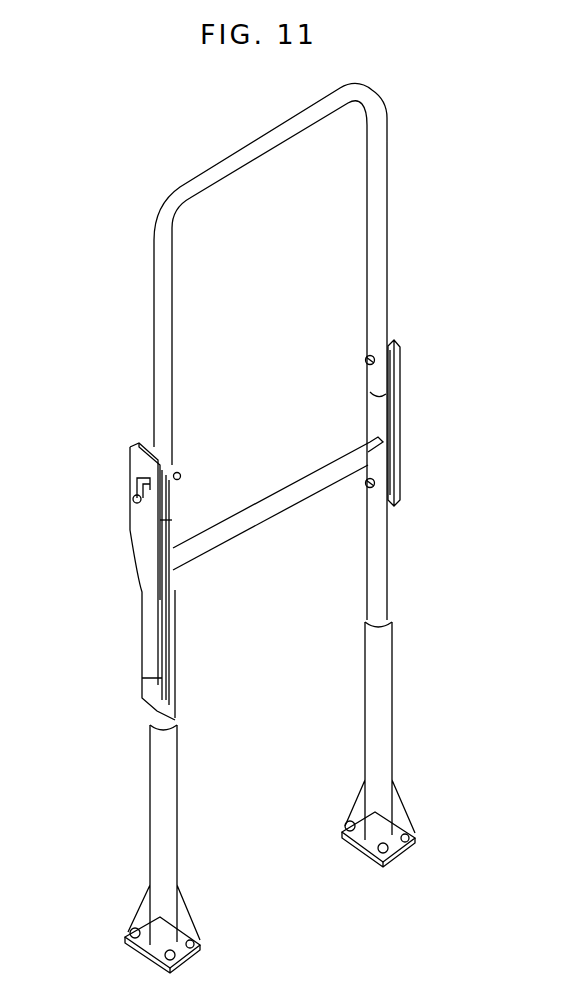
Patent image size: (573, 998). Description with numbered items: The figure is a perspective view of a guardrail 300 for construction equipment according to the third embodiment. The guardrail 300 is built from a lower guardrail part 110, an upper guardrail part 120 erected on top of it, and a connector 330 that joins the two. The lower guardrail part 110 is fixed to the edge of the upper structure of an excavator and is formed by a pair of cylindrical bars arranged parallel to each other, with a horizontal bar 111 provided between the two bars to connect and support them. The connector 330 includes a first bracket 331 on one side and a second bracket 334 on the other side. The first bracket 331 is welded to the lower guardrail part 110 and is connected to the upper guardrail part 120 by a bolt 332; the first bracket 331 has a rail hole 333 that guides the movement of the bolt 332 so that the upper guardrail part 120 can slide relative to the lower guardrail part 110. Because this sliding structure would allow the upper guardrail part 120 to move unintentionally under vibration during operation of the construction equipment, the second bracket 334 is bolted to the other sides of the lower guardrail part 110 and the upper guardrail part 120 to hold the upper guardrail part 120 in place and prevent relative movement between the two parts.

The guardrail for construction equipment 300 is at (95, 118).
The upper guardrail part 120 is at (388, 203).
The lower guardrail part 110 is at (391, 683).
The horizontal bar 111 is at (262, 512).
The connector 330 is at (118, 468).
The first bracket 331 is at (142, 621).
The bolt 332 is at (130, 496).
The rail hole 333 is at (140, 678).
The second bracket 334 is at (401, 429).